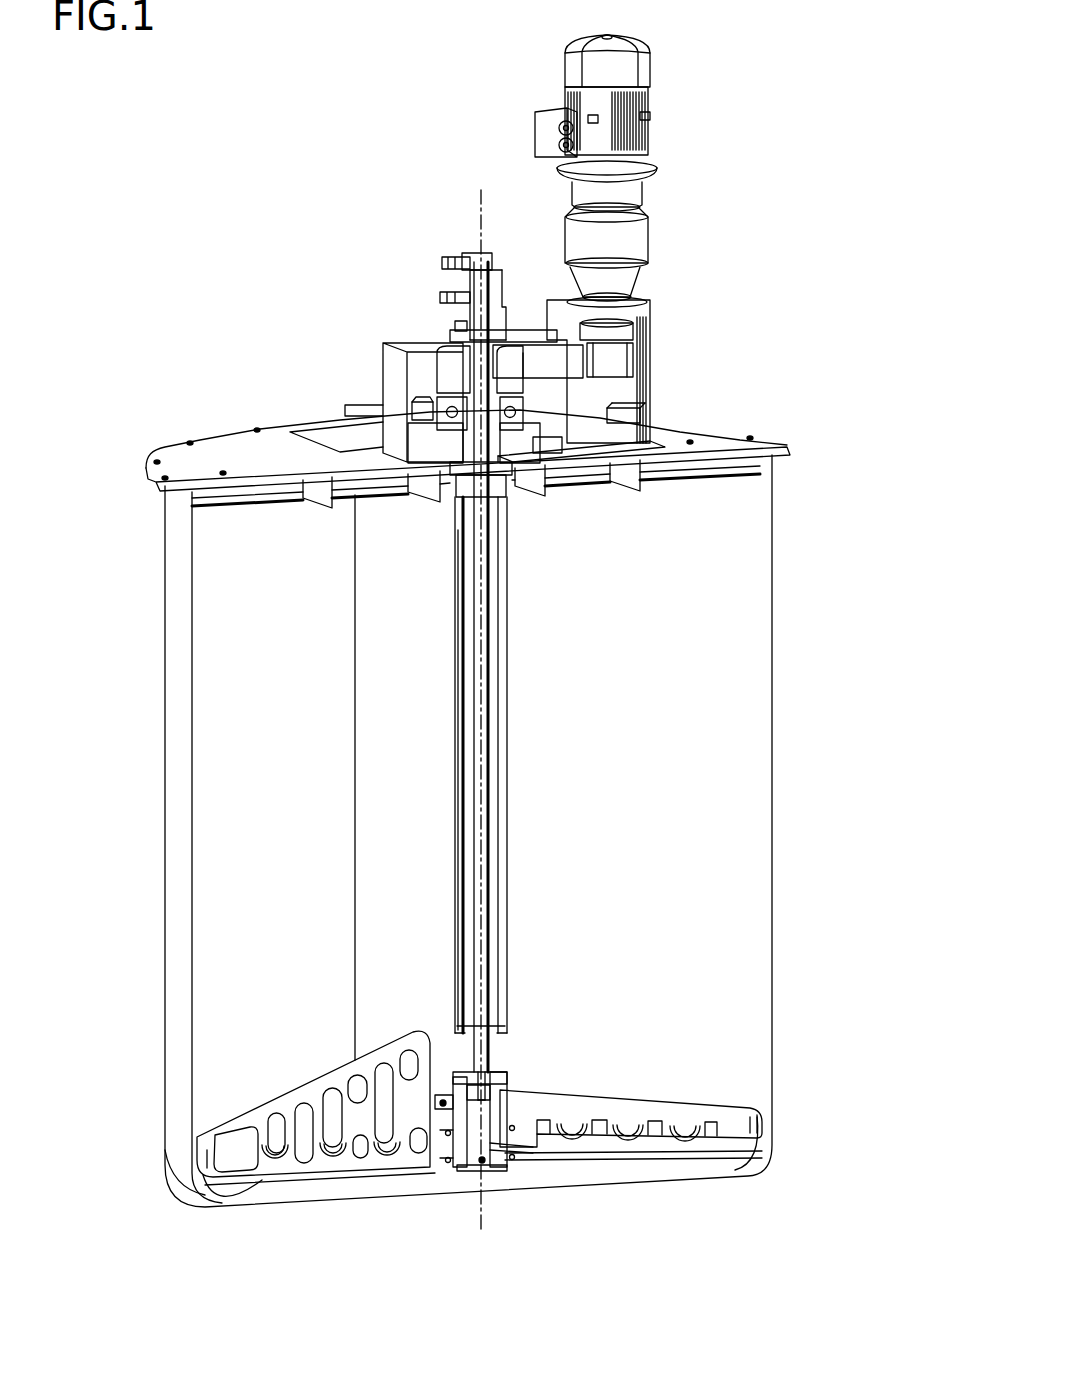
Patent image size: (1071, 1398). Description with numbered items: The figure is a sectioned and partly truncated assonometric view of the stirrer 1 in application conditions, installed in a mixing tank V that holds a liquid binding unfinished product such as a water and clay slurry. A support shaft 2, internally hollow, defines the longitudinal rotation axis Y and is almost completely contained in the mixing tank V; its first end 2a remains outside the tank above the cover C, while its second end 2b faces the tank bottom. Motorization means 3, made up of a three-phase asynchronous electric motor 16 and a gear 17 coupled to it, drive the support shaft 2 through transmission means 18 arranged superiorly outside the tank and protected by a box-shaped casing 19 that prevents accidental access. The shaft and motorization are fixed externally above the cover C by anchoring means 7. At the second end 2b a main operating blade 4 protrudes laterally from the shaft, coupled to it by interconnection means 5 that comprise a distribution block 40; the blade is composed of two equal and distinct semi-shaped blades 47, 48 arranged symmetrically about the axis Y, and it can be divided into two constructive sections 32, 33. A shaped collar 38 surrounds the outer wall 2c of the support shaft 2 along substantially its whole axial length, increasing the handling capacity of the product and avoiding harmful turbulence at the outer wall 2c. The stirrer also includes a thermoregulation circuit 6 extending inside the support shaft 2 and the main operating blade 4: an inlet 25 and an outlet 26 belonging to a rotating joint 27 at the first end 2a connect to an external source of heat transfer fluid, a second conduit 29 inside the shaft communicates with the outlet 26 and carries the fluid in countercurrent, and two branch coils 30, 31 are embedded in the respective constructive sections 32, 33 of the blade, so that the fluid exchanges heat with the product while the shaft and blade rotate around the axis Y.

The stirrer 1 is at (343, 92).
The support shaft 2 is at (506, 1052).
The first end 2a is at (502, 285).
The second end 2b is at (508, 1071).
The outer wall 2c is at (508, 1034).
The motorization means 3 is at (700, 133).
The main operating blade 4 is at (360, 1183).
The interconnection means 5 is at (470, 1180).
The thermoregulation circuit 6 is at (512, 650).
The anchoring means 7 is at (668, 428).
The three-phase asynchronous electric motor 16 is at (625, 75).
The gear 17 is at (625, 243).
The transmission means 18 is at (652, 352).
The box-shaped casing 19 is at (390, 390).
The inlet 25 is at (435, 282).
The outlet 26 is at (443, 247).
The rotating joint 27 is at (485, 258).
The second conduit 29 is at (458, 327).
The branch coil 30 is at (283, 1163).
The branch coil 31 is at (632, 1138).
The constructive section 32 is at (235, 1183).
The constructive section 33 is at (740, 1135).
The shaped collar 38 is at (460, 690).
The distribution block 40 is at (480, 1165).
The semi-shaped blade 47 is at (317, 1187).
The semi-shaped blade 48 is at (582, 1177).
The cover C is at (228, 455).
The mixing tank V is at (160, 1038).
The longitudinal rotation axis Y is at (470, 698).